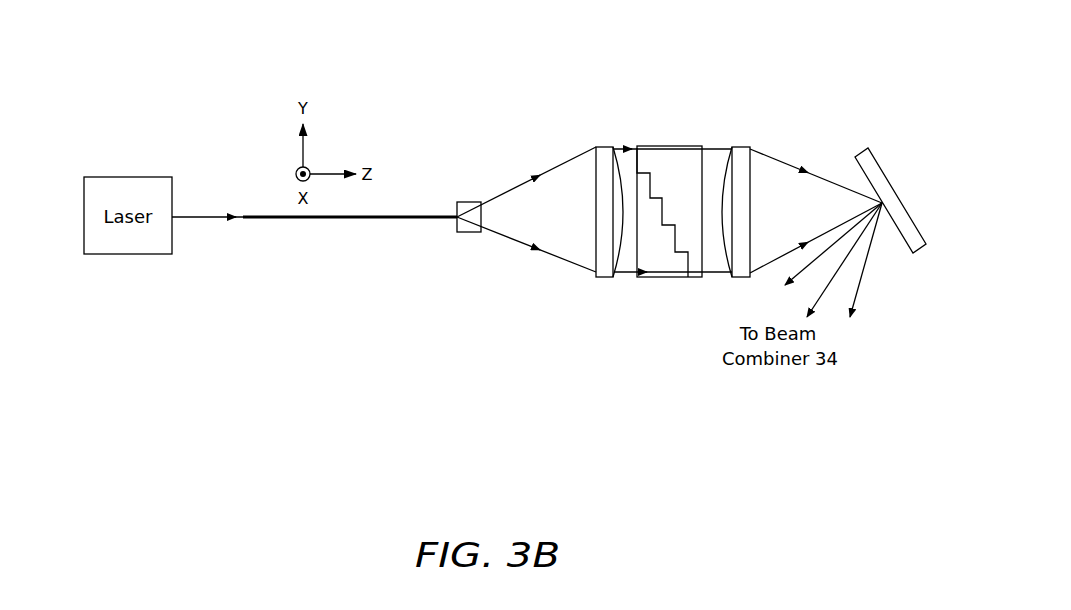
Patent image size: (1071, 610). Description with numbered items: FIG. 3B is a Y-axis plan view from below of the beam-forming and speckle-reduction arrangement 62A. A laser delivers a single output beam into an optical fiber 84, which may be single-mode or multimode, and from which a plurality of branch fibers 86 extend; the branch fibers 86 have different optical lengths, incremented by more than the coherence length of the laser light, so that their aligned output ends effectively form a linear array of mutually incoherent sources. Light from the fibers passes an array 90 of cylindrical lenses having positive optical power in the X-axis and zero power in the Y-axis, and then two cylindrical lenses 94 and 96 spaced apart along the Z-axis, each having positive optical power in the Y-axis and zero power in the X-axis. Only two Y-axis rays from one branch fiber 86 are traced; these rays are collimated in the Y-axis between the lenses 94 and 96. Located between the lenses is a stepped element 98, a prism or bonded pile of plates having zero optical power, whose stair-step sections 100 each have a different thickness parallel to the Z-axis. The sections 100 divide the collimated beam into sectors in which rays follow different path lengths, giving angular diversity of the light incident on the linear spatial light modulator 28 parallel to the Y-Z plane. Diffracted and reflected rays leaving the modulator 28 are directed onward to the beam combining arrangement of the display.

The optical fiber 84 is at (266, 226).
The branch fibers 86 is at (421, 213).
The array of cylindrical lenses 90 is at (471, 240).
The cylindrical lens 94 is at (594, 283).
The cylindrical lens 96 is at (747, 137).
The stepped element 98 is at (689, 288).
The stair-step sections 100 is at (652, 190).
The linear spatial light modulator 28 is at (858, 144).
The beam-forming and speckle-reduction arrangement 62A is at (634, 444).